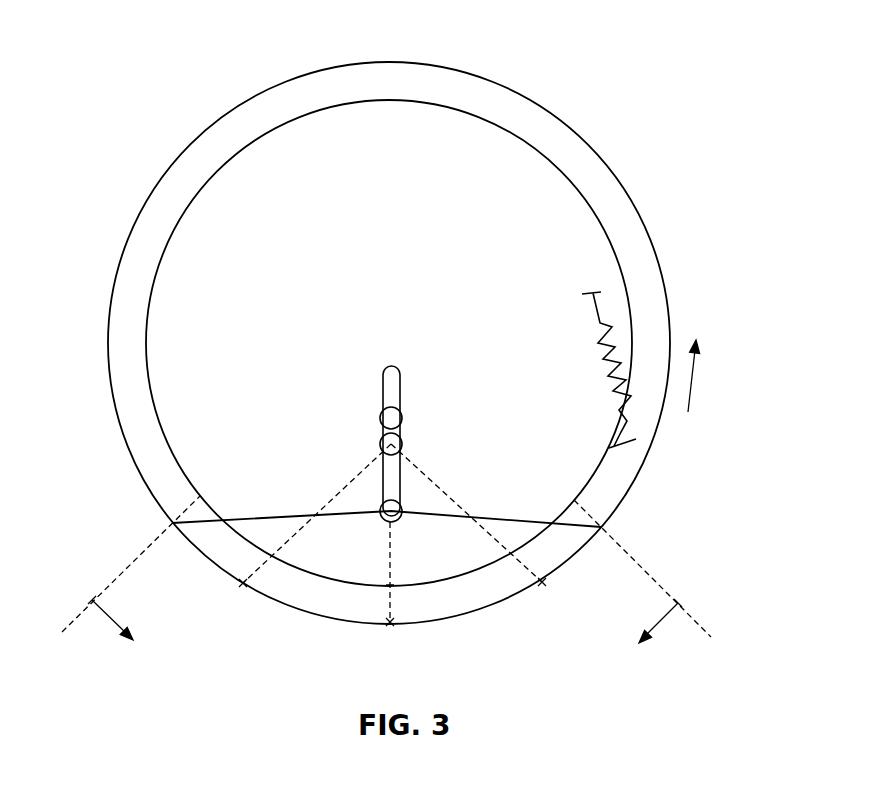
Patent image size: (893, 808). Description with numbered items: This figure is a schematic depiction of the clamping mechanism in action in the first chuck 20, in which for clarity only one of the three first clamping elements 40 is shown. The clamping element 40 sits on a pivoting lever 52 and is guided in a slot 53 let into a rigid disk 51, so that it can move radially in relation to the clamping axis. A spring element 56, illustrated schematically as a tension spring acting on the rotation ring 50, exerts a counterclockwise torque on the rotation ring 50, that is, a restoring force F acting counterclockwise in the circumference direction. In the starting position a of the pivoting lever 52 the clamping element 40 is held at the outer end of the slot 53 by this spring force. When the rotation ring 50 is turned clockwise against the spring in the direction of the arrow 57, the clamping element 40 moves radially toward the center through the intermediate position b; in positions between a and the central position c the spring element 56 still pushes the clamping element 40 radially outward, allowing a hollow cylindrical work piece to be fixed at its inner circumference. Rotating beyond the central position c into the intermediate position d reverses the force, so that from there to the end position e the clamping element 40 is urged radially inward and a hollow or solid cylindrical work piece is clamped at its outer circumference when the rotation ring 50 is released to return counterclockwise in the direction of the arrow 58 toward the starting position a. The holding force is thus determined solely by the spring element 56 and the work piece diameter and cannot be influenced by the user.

The first chuck 20 is at (396, 320).
The rotation ring 50 is at (612, 198).
The rigid disk 51 is at (400, 125).
The pivoting lever 52 is at (285, 518).
The slot 53 is at (395, 387).
The first clamping element 40 is at (390, 418).
The spring element 56 is at (603, 329).
The arrow 57 is at (667, 613).
The arrow 58 is at (103, 615).
The starting position a is at (500, 518).
The intermediate position b is at (522, 565).
The central position c is at (402, 418).
The intermediate position d is at (403, 443).
The end position e is at (260, 517).
The restoring force F is at (693, 378).